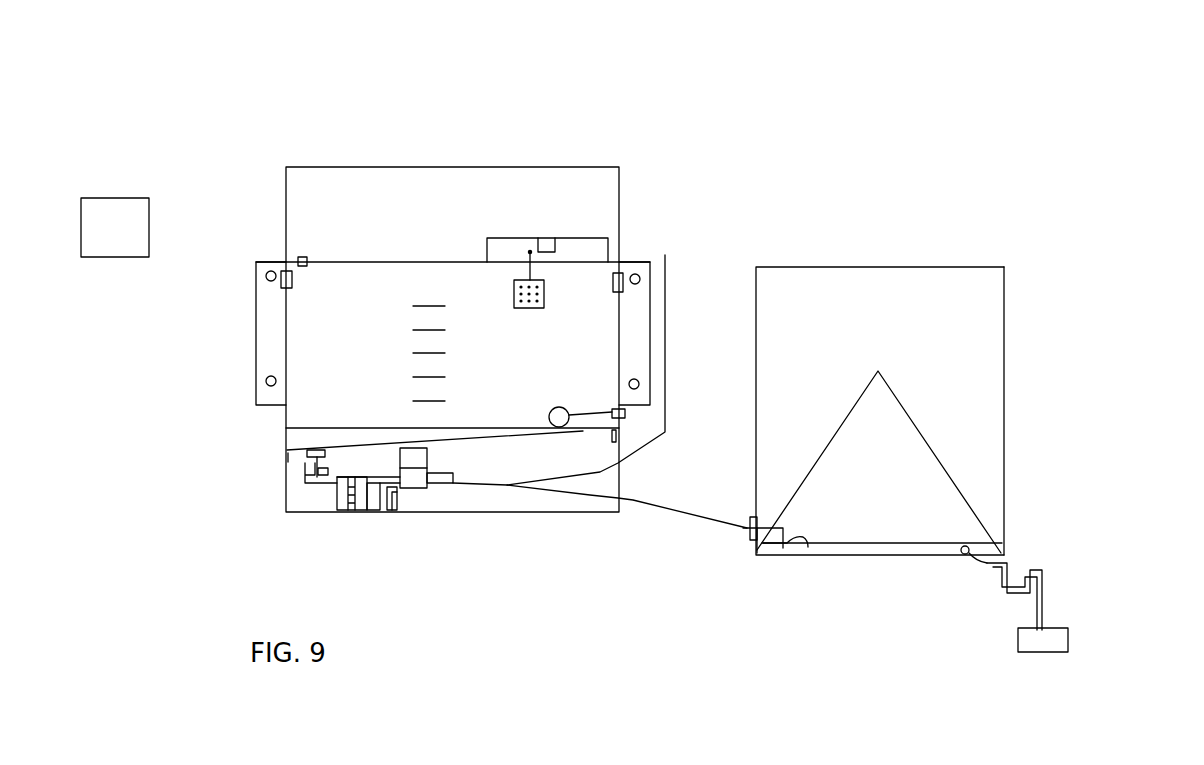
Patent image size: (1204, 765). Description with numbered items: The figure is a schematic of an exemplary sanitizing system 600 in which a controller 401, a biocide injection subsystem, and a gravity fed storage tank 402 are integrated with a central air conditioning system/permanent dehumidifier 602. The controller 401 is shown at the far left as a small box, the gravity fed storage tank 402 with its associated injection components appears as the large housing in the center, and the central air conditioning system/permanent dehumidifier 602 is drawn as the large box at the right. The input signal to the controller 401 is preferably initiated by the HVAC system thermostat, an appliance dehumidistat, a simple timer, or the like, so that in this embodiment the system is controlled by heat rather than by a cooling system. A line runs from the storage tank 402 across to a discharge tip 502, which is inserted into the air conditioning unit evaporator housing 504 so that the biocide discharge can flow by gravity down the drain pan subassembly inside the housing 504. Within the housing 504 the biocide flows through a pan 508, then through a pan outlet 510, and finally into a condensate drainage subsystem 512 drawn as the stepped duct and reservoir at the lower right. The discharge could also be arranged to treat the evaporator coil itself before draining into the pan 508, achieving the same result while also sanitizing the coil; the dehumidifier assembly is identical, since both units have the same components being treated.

The controller 401 is at (115, 198).
The gravity fed storage tank 402 is at (568, 132).
The sanitizing system 600 is at (832, 103).
The central air conditioning system/permanent dehumidifier 602 is at (910, 252).
The evaporator housing 504 is at (1007, 363).
The discharge tip 502 is at (807, 553).
The pan 508 is at (900, 550).
The pan outlet 510 is at (963, 556).
The condensate drainage subsystem 512 is at (1052, 575).